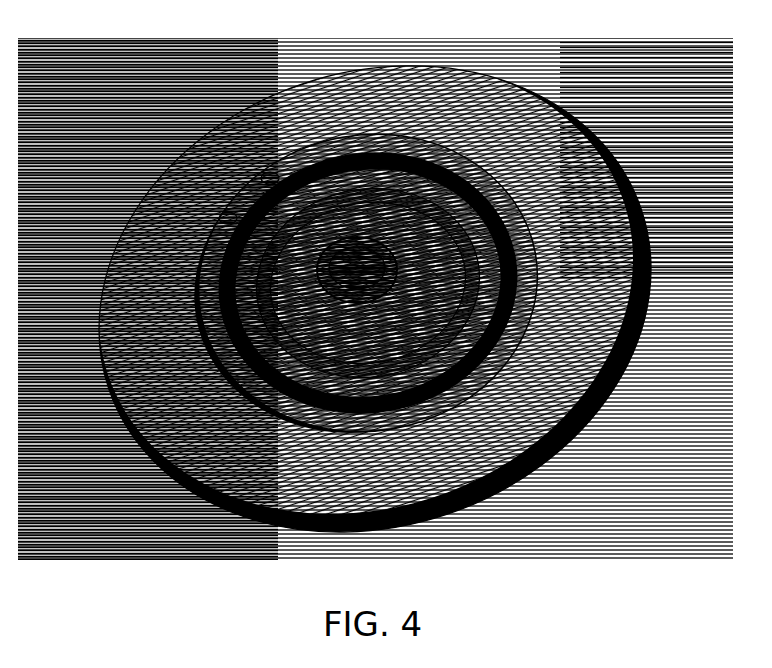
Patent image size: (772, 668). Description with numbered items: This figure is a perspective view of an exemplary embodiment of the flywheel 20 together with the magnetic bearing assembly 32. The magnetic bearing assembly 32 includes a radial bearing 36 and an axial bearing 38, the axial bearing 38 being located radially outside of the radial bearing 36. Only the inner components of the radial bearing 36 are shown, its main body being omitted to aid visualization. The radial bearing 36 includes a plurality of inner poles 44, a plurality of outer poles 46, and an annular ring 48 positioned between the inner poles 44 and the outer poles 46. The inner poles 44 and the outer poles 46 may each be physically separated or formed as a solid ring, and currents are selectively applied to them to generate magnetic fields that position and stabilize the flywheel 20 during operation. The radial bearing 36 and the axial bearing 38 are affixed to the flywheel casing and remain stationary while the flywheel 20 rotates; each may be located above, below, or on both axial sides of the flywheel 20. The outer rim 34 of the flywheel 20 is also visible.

The flywheel 20 is at (609, 183).
The magnetic bearing assembly 32 is at (214, 374).
The rim 34 is at (613, 259).
The radial bearing 36 is at (461, 172).
The axial bearing 38 is at (530, 307).
The inner poles 44 is at (356, 163).
The outer poles 46 is at (263, 173).
The annular ring 48 is at (212, 301).